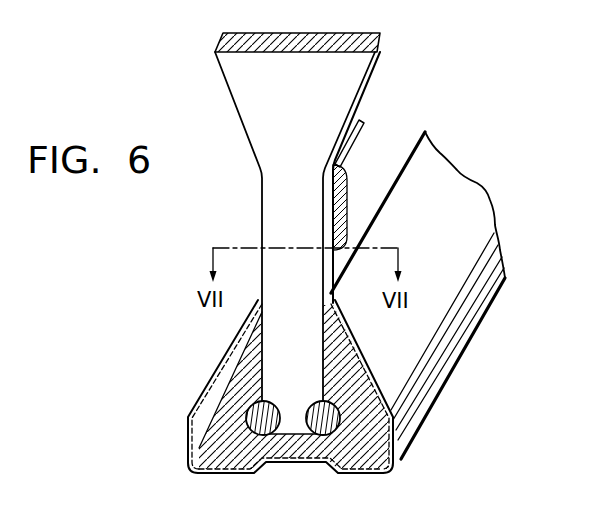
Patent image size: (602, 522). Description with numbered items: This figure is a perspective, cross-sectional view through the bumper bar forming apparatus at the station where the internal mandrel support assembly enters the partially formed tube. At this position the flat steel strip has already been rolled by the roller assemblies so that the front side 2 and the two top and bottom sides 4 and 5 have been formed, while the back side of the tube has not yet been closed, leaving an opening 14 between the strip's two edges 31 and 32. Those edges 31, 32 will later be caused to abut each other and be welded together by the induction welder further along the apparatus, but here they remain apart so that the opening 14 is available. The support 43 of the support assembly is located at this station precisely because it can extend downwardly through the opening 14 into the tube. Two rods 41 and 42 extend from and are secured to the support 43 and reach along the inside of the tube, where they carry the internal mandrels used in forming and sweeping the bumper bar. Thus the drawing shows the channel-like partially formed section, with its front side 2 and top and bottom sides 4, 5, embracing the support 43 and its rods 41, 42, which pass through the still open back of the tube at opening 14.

The opening 14 is at (380, 165).
The front side 2 is at (350, 477).
The top side 4 is at (238, 333).
The bottom side 5 is at (368, 370).
The support 43 is at (260, 208).
The rod 41 is at (251, 432).
The rod 42 is at (312, 434).
The edge 31 is at (374, 213).
The edge 32 is at (355, 143).